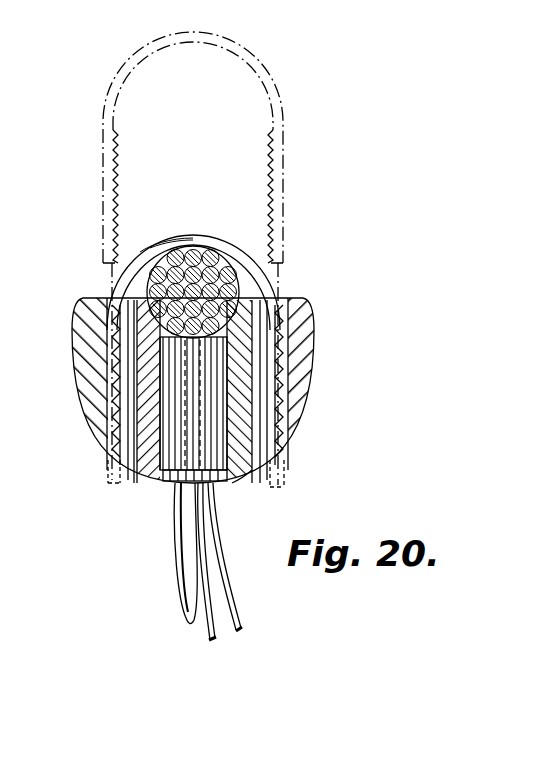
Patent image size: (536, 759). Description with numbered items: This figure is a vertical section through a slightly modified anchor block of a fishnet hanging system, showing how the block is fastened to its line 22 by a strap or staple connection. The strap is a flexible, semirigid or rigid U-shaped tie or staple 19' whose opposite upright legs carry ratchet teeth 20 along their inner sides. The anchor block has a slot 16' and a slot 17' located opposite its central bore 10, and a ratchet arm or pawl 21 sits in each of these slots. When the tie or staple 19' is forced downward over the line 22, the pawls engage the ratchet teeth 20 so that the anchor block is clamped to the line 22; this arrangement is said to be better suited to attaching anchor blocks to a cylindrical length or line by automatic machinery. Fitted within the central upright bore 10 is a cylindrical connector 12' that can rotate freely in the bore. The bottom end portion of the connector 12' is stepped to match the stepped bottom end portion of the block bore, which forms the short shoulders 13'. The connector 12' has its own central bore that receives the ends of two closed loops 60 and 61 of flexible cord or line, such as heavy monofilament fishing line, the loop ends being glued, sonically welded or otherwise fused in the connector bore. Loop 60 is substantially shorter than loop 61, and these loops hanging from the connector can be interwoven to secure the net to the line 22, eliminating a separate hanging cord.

The central bore 10 is at (293, 315).
The connector 12' is at (155, 427).
The short shoulders 13' is at (248, 499).
The slot 16' is at (86, 471).
The slot 17' is at (288, 486).
The U-shaped tie or staple 19' is at (209, 147).
The ratchet teeth 20 is at (280, 163).
The ratchet arm or pawl 21 is at (120, 368).
The line 22 is at (170, 248).
The loop 60 is at (178, 600).
The loop 61 is at (210, 628).